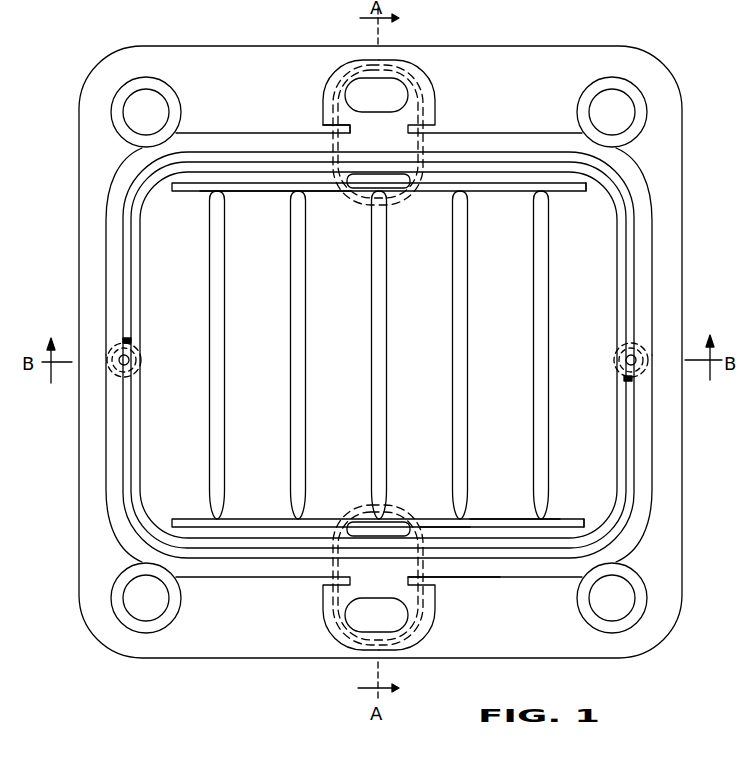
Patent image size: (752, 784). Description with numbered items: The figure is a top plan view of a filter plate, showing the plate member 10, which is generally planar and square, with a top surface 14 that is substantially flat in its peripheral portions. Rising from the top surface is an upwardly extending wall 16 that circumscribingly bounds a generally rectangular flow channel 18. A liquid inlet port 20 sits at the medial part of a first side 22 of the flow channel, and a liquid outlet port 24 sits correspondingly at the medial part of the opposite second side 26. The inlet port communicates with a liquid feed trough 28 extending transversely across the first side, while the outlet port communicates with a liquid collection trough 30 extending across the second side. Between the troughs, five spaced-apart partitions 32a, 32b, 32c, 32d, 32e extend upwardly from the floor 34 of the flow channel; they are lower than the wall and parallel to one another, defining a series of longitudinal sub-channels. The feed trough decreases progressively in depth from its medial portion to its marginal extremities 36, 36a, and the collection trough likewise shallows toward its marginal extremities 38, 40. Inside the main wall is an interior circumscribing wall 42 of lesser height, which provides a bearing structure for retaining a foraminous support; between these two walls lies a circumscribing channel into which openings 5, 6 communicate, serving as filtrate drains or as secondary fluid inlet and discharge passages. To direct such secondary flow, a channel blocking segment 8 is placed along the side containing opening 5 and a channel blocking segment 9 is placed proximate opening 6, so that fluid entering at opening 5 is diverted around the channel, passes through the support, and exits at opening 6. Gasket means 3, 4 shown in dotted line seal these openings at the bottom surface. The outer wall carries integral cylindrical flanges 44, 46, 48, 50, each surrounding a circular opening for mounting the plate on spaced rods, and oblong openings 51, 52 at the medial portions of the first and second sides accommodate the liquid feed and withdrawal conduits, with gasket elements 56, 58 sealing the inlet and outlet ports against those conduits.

The gasket means 3 is at (136, 370).
The locating pin bore (hidden) 4 is at (643, 373).
The opening 5 is at (137, 351).
The opening 6 is at (616, 360).
The channel blocking segment 8 is at (127, 275).
The channel blocking segment 9 is at (625, 475).
The plate member 10 is at (212, 654).
The top surface 14 is at (252, 639).
The upwardly extending wall 16 is at (520, 568).
The flow channel 18 is at (160, 432).
The liquid inlet port 20 is at (390, 182).
The first side 22 is at (294, 181).
The liquid outlet port 24 is at (392, 534).
The second side 26 is at (452, 536).
The liquid feed trough 28 is at (263, 191).
The liquid collection trough 30 is at (502, 519).
The partition 32a is at (224, 331).
The partition 32b is at (304, 334).
The partition 32c is at (385, 332).
The partition 32d is at (467, 333).
The partition 32e is at (548, 333).
The floor 34 is at (355, 294).
The marginal extremity 36 is at (180, 192).
The marginal extremity 36a is at (578, 191).
The marginal extremity 38 is at (172, 519).
The marginal extremity 40 is at (569, 519).
The interior circumscribing wall 42 is at (617, 426).
The cylindrical flange 44 is at (137, 633).
The cylindrical flange 46 is at (632, 614).
The cylindrical flange 48 is at (642, 88).
The cylindrical flange 50 is at (140, 77).
The oblong opening 51 is at (385, 92).
The oblong opening 52 is at (370, 617).
The gasket element 56 is at (333, 125).
The gasket element 58 is at (335, 582).